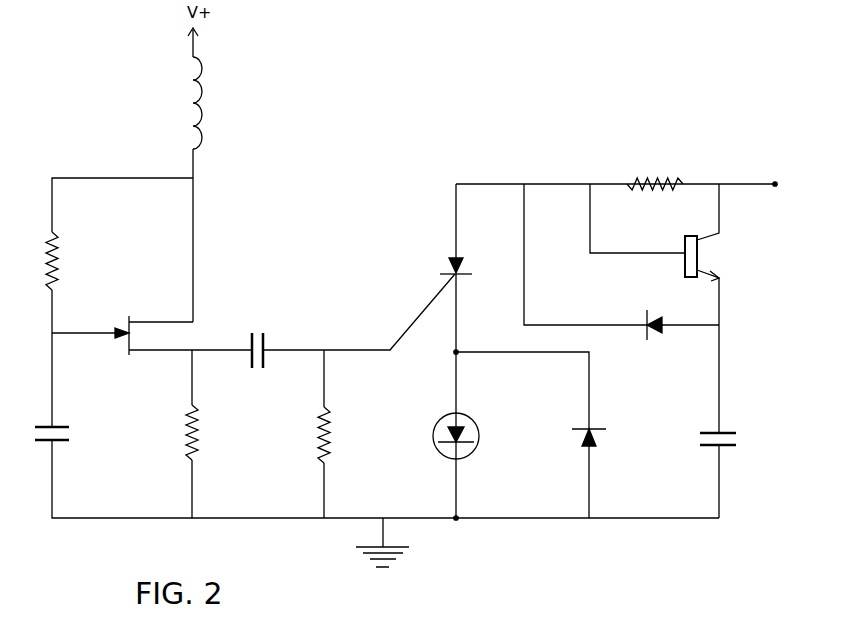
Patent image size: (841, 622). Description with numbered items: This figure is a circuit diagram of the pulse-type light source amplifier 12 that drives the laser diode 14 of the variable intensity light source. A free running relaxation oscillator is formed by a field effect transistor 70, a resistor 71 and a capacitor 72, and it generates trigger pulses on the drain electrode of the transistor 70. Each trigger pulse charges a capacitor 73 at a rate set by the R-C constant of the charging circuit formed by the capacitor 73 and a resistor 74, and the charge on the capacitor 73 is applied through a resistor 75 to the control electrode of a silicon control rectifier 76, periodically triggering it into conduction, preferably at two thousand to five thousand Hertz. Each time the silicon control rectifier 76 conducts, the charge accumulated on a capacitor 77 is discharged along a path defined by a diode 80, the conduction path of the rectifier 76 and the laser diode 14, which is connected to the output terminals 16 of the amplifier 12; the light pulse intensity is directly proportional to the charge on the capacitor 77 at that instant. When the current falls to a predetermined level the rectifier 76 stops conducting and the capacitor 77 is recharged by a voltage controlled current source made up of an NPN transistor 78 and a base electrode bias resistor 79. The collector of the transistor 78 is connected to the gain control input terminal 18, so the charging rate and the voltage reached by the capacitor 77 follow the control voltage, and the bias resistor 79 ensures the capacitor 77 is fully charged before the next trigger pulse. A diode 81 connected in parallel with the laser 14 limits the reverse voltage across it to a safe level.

The light source amplifier 12 is at (440, 122).
The laser diode 14 is at (445, 414).
The output terminals 16 is at (458, 351).
The gain control input terminal 18 is at (776, 182).
The field effect transistor 70 is at (128, 323).
The resistor 71 is at (58, 263).
The capacitor 72 is at (55, 427).
The capacitor 73 is at (267, 342).
The resistor 74 is at (198, 443).
The resistor 75 is at (333, 445).
The silicon control rectifier 76 is at (453, 272).
The capacitor 77 is at (722, 431).
The NPN transistor 78 is at (700, 253).
The bias resistor 79 is at (655, 178).
The diode 80 is at (647, 318).
The diode 81 is at (590, 428).